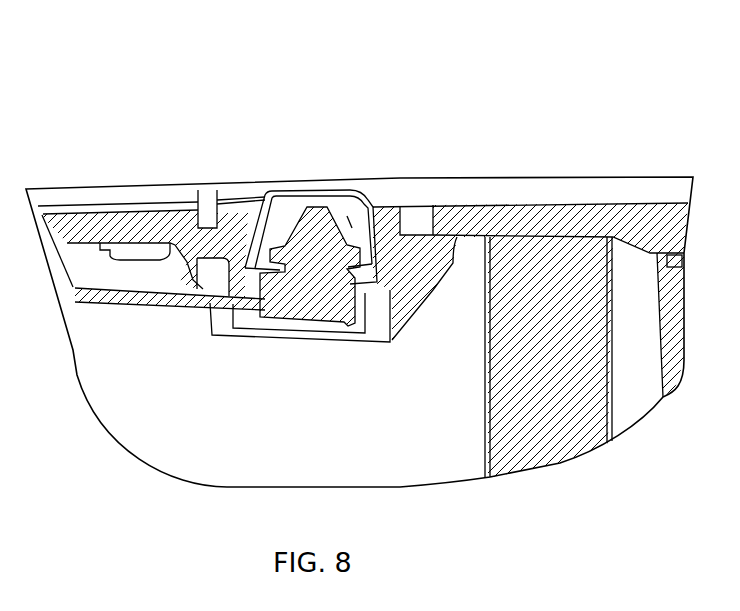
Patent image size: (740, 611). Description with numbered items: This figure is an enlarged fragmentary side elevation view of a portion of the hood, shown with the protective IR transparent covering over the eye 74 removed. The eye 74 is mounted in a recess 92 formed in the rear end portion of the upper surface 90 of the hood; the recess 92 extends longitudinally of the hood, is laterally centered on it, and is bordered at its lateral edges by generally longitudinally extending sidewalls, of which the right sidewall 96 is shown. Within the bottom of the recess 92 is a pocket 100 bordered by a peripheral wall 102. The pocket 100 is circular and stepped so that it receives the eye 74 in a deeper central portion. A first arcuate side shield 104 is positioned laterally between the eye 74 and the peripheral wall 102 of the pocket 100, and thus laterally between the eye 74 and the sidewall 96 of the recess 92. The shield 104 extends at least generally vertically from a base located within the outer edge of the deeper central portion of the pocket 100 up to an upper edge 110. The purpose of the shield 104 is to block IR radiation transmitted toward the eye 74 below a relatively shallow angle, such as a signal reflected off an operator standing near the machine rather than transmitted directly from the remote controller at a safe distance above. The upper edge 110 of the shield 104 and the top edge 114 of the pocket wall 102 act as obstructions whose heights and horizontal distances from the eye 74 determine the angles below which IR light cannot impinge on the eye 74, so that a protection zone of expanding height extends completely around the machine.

The eye 74 is at (313, 203).
The upper surface 90 is at (539, 160).
The recess 92 is at (581, 203).
The right sidewall 96 is at (398, 190).
The pocket 100 is at (407, 190).
The peripheral wall 102 is at (218, 215).
The first arcuate side shield 104 is at (347, 210).
The upper edge 110 is at (275, 197).
The top edge 114 is at (197, 190).